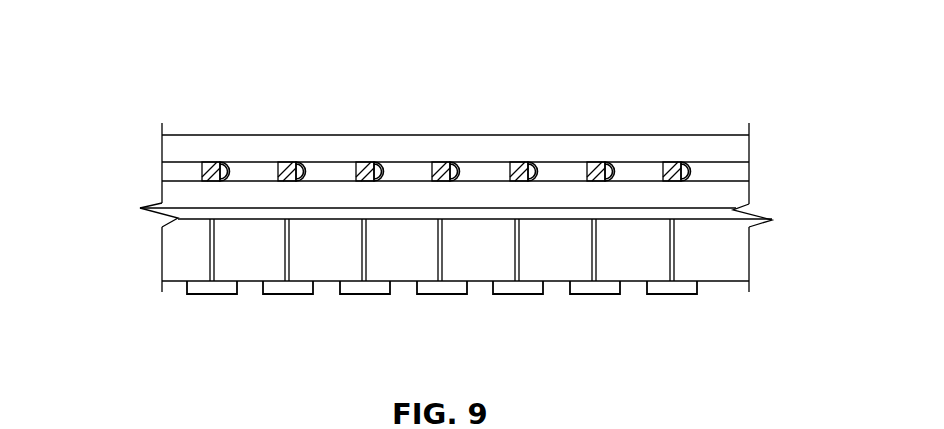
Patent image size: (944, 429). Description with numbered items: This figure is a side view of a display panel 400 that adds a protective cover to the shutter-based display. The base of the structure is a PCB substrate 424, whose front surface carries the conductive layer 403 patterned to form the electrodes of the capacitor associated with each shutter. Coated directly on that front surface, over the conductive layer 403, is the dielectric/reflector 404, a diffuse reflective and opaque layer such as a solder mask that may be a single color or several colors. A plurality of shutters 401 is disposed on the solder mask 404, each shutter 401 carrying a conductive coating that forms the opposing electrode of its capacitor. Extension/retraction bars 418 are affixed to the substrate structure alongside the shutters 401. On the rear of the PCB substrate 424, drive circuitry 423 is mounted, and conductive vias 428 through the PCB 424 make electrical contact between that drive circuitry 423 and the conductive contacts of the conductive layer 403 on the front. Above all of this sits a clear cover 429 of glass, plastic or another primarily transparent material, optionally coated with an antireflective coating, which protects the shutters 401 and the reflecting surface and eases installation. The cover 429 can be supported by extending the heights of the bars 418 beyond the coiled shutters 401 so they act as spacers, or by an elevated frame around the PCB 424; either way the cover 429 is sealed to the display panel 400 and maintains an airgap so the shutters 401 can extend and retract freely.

The display panel 400 is at (141, 60).
The shutter 401 is at (236, 172).
The conductive layer 403 is at (703, 215).
The dielectric/reflector 404 is at (723, 189).
The extension/retraction bar 418 is at (200, 168).
The drive circuitry 423 is at (365, 295).
The PCB substrate 424 is at (725, 247).
The conductive via 428 is at (207, 240).
The clear cover 429 is at (735, 149).